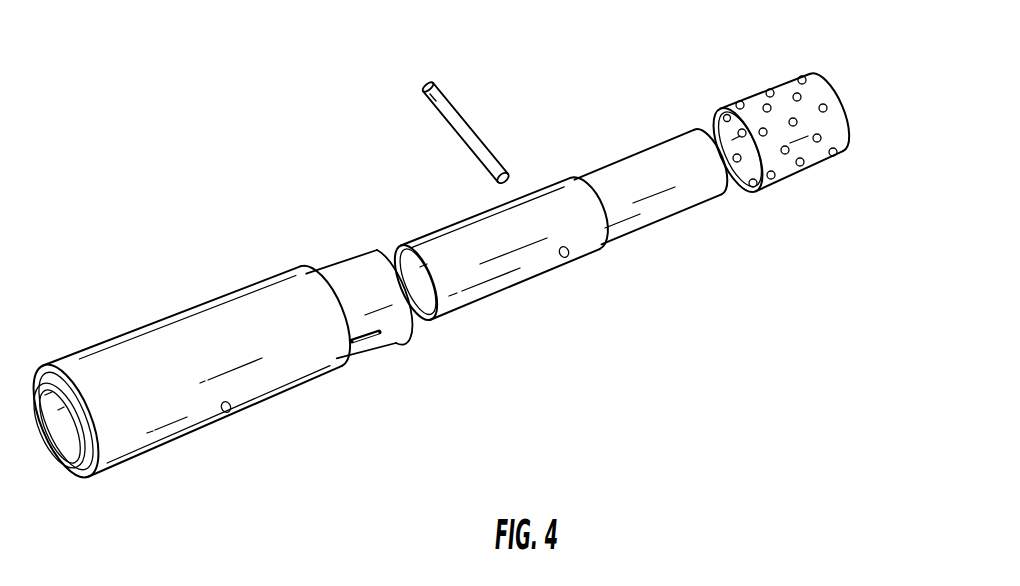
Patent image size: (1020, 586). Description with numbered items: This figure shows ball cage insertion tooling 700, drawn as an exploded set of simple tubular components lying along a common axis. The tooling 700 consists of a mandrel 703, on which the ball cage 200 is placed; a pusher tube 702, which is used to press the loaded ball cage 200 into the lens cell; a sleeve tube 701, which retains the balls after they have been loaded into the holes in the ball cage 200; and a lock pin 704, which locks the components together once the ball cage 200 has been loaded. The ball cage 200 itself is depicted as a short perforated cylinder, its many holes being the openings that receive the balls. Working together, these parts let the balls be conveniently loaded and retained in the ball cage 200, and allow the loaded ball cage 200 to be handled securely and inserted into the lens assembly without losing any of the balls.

The tooling 700 is at (373, 263).
The sleeve tube 701 is at (228, 414).
The pusher tube 702 is at (548, 287).
The mandrel 703 is at (580, 262).
The lock pin 704 is at (458, 105).
The ball cage 200 is at (813, 177).